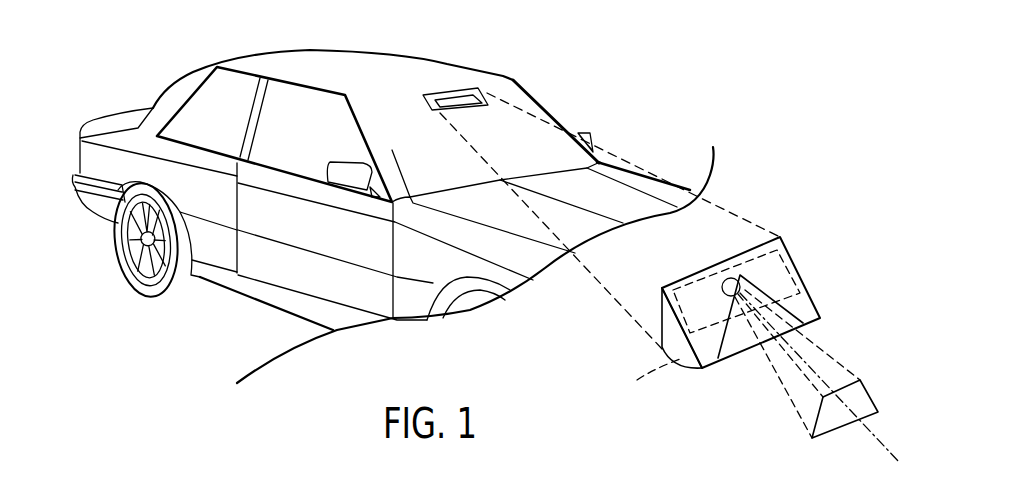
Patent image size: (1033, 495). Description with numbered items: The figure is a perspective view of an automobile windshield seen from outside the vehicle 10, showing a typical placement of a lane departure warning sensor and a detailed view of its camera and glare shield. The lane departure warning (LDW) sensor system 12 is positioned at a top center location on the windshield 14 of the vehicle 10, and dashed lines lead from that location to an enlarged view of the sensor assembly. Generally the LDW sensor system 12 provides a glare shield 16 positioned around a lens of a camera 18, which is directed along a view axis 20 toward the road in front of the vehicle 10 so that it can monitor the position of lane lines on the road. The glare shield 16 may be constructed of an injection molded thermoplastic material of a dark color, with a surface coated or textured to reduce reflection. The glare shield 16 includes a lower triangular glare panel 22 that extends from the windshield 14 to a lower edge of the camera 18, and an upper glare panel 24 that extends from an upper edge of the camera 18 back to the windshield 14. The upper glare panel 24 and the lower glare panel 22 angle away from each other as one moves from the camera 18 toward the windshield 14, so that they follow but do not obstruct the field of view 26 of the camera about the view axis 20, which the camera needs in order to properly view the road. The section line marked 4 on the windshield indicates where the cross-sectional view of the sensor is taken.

The vehicle 10 is at (538, 45).
The lane departure warning (LDW) sensor system 12 is at (430, 107).
The windshield 14 is at (517, 93).
The glare shield 16 is at (817, 310).
The camera 18 is at (723, 277).
The view axis 20 is at (873, 437).
The lower triangular glare panel 22 is at (730, 342).
The upper glare panel 24 is at (645, 375).
The field of view 26 is at (860, 388).
The section line 4- 4 is at (473, 123).